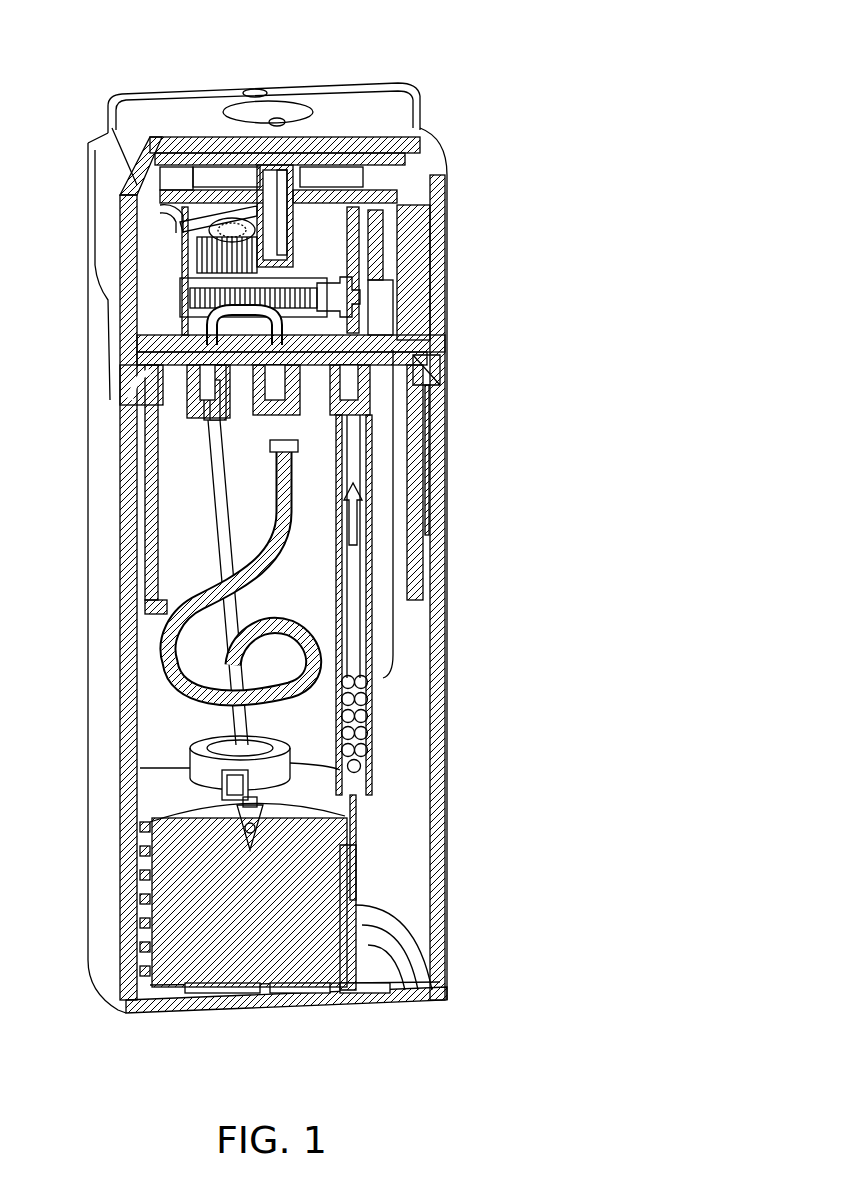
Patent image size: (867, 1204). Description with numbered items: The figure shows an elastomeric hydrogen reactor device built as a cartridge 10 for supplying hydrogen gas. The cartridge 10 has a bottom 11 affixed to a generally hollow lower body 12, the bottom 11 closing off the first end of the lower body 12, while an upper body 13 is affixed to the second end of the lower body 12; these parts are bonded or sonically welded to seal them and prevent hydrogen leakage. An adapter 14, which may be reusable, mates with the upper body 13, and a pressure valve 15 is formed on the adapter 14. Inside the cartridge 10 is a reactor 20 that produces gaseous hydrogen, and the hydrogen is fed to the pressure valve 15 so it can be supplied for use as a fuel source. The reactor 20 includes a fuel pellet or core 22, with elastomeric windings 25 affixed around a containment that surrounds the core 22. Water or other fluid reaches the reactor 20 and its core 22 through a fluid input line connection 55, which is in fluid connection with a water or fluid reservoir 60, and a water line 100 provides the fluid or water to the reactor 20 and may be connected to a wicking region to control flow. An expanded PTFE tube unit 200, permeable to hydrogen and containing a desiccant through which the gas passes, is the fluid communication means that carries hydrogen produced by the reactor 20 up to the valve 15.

The cartridge 10 is at (461, 81).
The bottom 11 is at (360, 1000).
The lower body 12 is at (108, 830).
The upper body 13 is at (420, 448).
The adapter 14 is at (100, 240).
The pressure valve 15 is at (283, 97).
The reactor 20 is at (170, 913).
The fuel pellet or core 22 is at (273, 912).
The elastomeric winding 25 is at (366, 903).
The fluid input line connection 55 is at (197, 455).
The fluid reservoir 60 is at (307, 448).
The water line 100 is at (190, 548).
The e-PTFE tube unit 200 is at (399, 786).